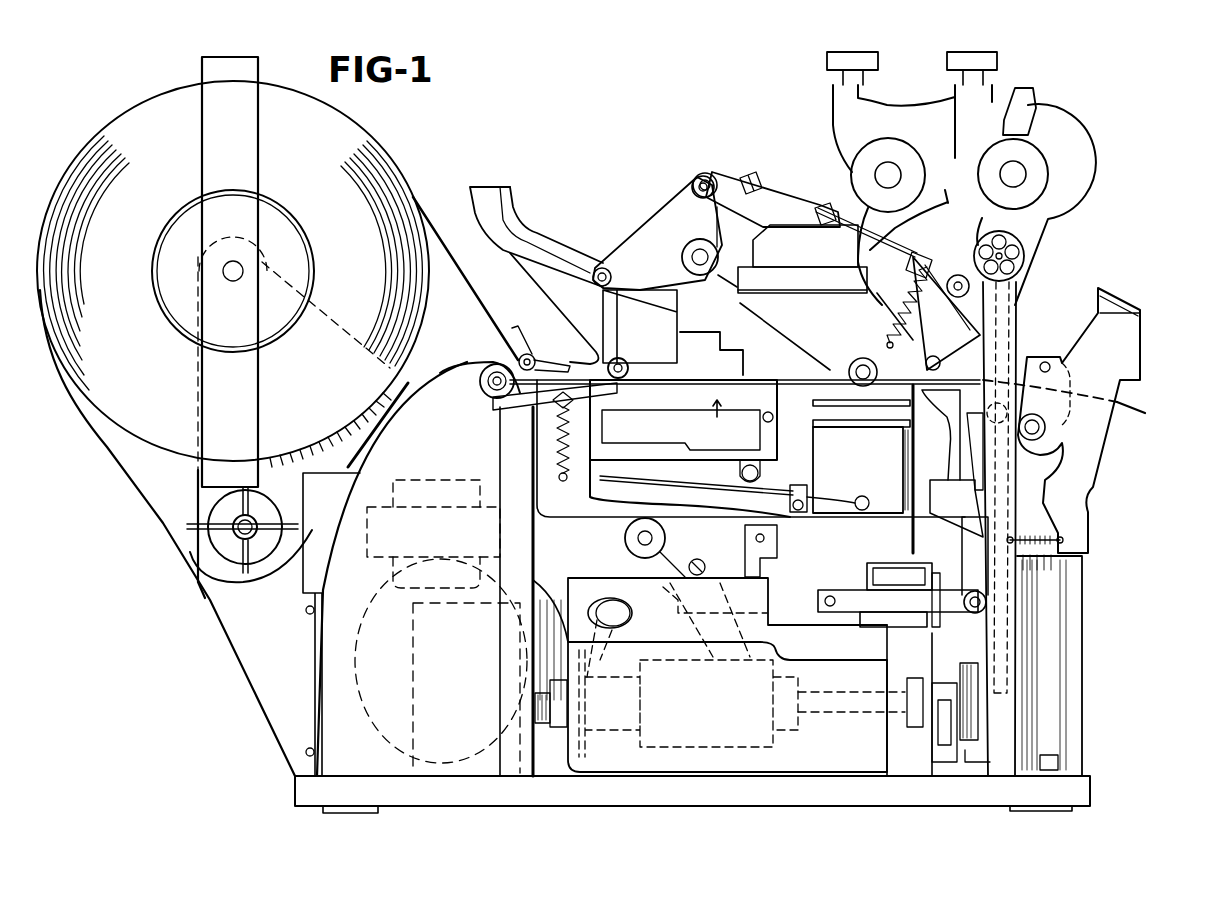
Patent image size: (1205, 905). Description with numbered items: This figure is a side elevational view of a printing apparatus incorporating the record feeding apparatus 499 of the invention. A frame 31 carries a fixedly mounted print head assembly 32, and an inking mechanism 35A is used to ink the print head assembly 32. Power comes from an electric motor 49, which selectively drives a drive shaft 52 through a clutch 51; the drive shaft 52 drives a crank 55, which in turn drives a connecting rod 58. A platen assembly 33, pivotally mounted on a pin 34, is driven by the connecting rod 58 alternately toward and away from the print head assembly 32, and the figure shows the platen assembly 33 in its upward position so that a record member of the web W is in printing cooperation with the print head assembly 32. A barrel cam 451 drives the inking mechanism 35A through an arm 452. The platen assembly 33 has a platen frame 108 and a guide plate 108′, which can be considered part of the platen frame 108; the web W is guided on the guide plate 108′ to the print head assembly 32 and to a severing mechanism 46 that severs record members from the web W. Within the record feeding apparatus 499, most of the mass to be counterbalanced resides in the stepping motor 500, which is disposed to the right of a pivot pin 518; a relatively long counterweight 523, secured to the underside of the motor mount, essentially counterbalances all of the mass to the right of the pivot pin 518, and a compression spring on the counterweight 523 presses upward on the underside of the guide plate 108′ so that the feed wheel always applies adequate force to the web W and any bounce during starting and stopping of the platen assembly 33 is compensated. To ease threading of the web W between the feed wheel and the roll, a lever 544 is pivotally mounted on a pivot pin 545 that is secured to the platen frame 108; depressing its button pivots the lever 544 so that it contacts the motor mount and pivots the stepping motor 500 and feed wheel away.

The frame 31 is at (923, 810).
The print head assembly 32 is at (1031, 77).
The platen assembly 33 is at (586, 535).
The pin 34 is at (480, 388).
The inking mechanism 35A is at (626, 233).
The severing mechanism 46 is at (1151, 365).
The electric motor 49 is at (378, 743).
The clutch 51 is at (595, 732).
The drive shaft 52 is at (908, 725).
The crank 55 is at (963, 670).
The connecting rod 58 is at (1015, 640).
The platen frame 108 is at (580, 511).
The guide plate 108′ is at (683, 387).
The barrel cam 451 is at (688, 768).
The arm 452 is at (688, 534).
The record feeding apparatus 499 is at (855, 536).
The stepping motor 500 is at (878, 513).
The pivot pin 518 is at (833, 370).
The counterweight 523 is at (683, 363).
The lever 544 is at (788, 335).
The pivot pin 545 is at (812, 450).
The web W is at (480, 285).